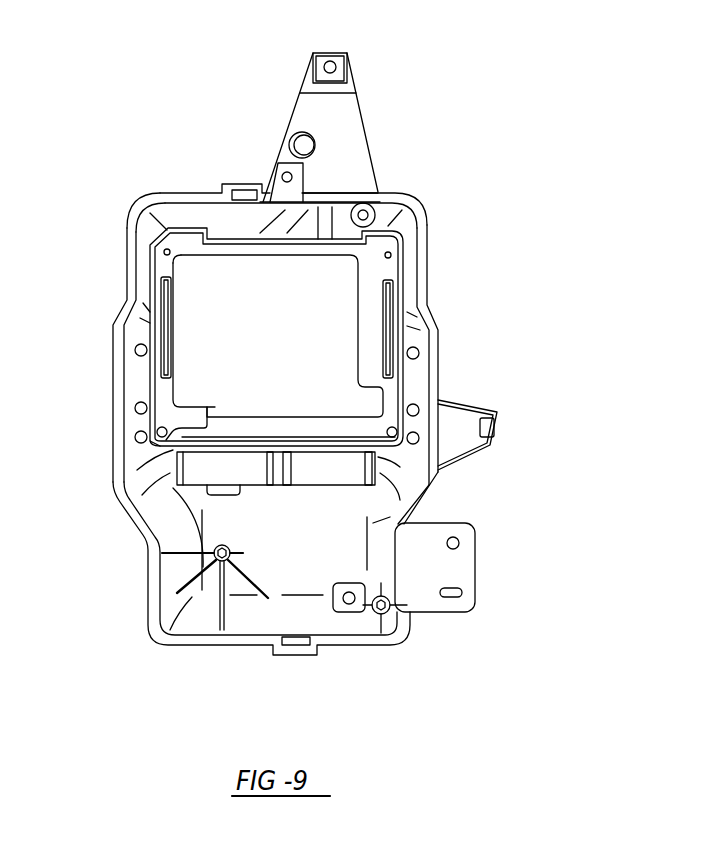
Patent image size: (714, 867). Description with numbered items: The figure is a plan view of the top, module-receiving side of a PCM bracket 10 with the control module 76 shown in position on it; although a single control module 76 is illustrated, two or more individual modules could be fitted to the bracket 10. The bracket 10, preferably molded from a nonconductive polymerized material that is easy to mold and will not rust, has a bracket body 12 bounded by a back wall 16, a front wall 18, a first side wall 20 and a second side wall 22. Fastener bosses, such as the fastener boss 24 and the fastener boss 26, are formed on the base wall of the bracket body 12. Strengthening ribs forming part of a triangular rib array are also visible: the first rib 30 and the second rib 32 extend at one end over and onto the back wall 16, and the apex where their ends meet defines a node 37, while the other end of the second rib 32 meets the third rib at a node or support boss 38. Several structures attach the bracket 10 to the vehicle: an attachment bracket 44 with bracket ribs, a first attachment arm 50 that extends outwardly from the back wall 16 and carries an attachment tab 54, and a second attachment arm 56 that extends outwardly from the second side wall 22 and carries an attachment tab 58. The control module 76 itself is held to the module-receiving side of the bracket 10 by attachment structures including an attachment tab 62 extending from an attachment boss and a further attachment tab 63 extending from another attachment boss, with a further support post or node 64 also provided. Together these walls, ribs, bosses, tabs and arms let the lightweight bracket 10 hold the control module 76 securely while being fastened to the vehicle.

The bracket 10 is at (150, 100).
The bracket body 12 is at (140, 252).
The back wall 16 is at (157, 193).
The front wall 18 is at (257, 640).
The first side wall 20 is at (118, 428).
The second side wall 22 is at (423, 288).
The fastener boss 24 is at (346, 612).
The fastener boss 26 is at (205, 530).
The first rib 30 is at (330, 219).
The second rib 32 is at (282, 230).
The node 37 is at (312, 197).
The support boss 38 is at (138, 345).
The attachment bracket 44 is at (463, 572).
The first attachment arm 50 is at (293, 117).
The attachment tab 54 is at (338, 78).
The second attachment arm 56 is at (462, 415).
The attachment tab 58 is at (487, 446).
The attachment tab 62 is at (420, 353).
The attachment tab 63 is at (142, 447).
The support post 64 is at (410, 448).
The control module 76 is at (370, 295).